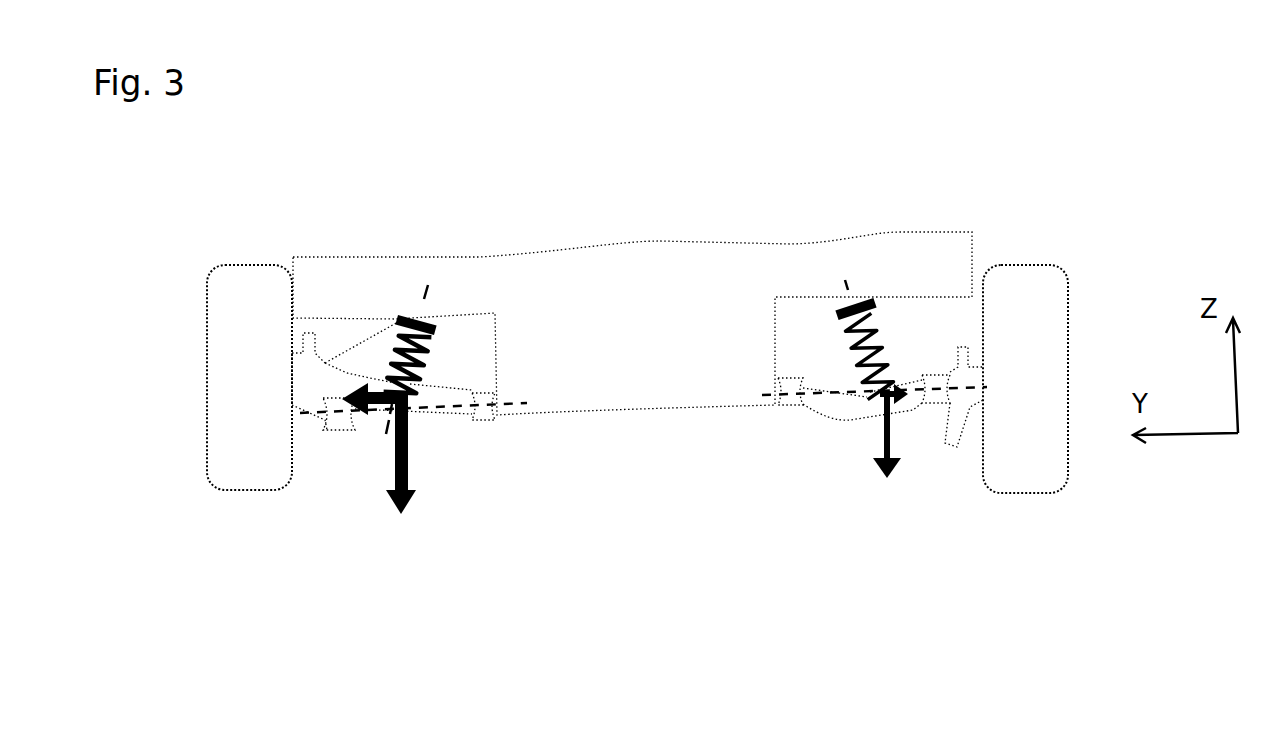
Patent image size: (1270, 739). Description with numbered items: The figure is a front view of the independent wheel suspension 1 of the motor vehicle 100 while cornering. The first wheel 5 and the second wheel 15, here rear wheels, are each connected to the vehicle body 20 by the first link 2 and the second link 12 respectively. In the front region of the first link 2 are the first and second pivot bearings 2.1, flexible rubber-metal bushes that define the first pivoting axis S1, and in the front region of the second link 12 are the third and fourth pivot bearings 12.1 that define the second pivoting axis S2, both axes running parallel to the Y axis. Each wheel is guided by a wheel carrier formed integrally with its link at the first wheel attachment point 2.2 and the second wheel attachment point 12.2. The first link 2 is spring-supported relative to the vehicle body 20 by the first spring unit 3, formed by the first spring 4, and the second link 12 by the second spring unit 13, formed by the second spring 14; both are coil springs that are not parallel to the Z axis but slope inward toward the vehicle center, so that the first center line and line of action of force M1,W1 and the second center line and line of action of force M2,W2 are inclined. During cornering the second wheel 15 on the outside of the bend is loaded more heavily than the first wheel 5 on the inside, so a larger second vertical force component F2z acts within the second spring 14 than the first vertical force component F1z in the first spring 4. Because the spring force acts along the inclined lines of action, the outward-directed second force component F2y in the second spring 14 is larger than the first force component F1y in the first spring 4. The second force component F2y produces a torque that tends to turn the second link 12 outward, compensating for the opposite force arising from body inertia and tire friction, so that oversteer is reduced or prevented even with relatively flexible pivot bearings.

The independent wheel suspension 1 is at (263, 232).
The motor vehicle 100 is at (645, 203).
The vehicle body 20 is at (647, 338).
The second wheel 15 is at (265, 398).
The first wheel 5 is at (1027, 387).
The second link 12 is at (438, 397).
The third and fourth pivot bearings 12.1 is at (335, 390).
The second wheel attachment point 12.2 is at (300, 405).
The second spring unit 13 is at (358, 347).
The second spring 14 is at (390, 358).
The second center line and second line of action of force M2,W2 is at (420, 314).
The second force component F2y is at (370, 383).
The second vertical force component F2z is at (422, 453).
The first pivoting axis S1 is at (450, 403).
The first link 2 is at (828, 400).
The first and second pivot bearings 2.1 is at (937, 367).
The first wheel attachment point 2.2 is at (975, 412).
The first spring unit 3 is at (905, 347).
The first spring 4 is at (868, 313).
The first center line and first line of action of force M1,W1 is at (850, 302).
The first force component F1y is at (911, 409).
The first vertical force component F1z is at (863, 438).
The second pivoting axis S2 is at (828, 395).